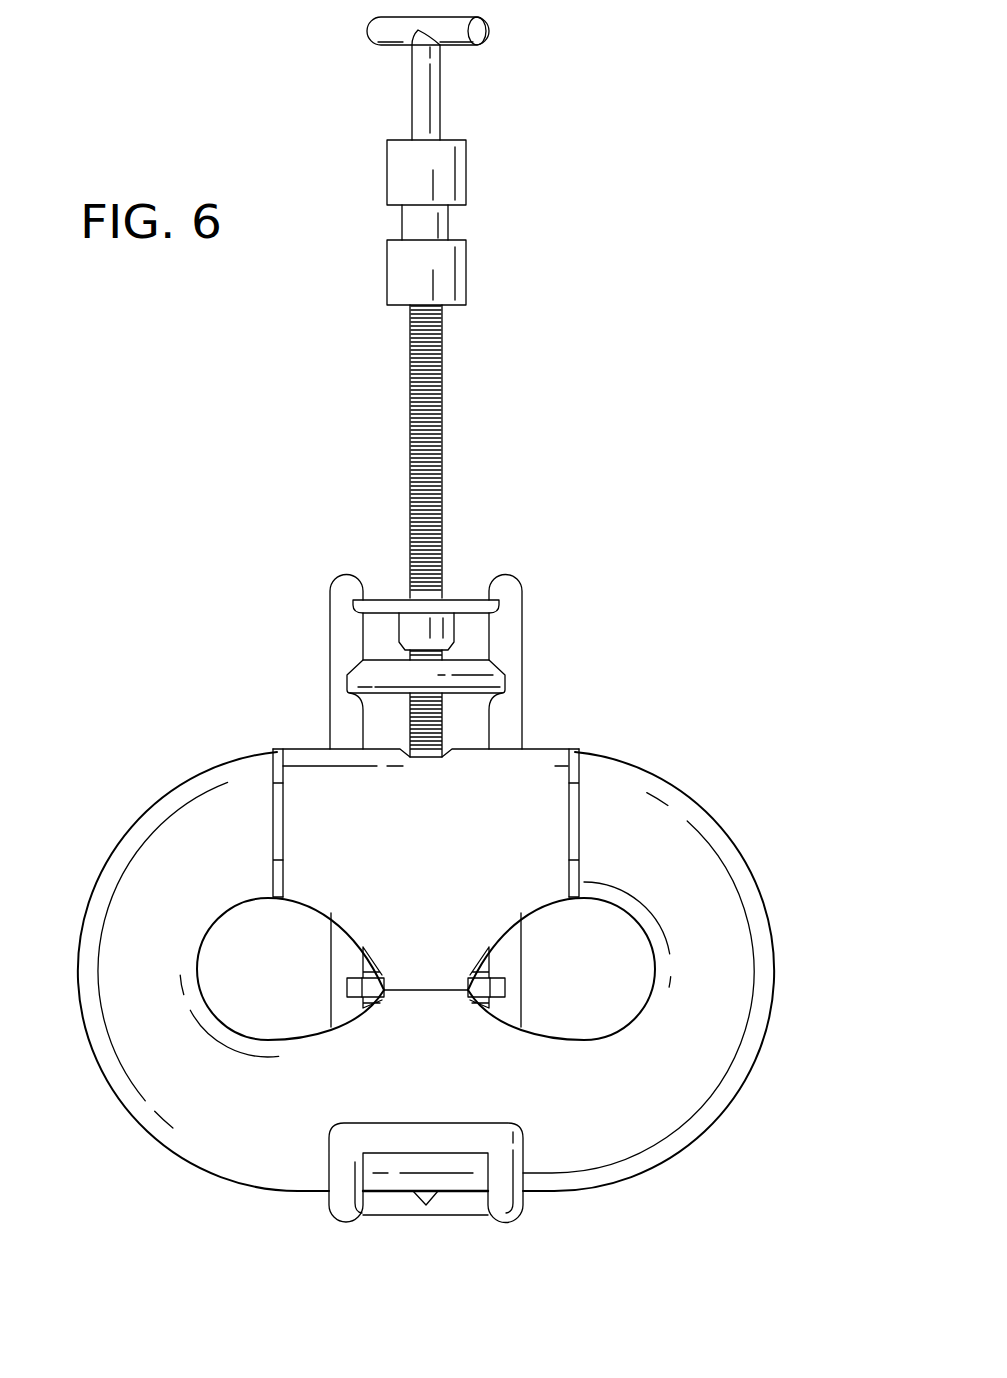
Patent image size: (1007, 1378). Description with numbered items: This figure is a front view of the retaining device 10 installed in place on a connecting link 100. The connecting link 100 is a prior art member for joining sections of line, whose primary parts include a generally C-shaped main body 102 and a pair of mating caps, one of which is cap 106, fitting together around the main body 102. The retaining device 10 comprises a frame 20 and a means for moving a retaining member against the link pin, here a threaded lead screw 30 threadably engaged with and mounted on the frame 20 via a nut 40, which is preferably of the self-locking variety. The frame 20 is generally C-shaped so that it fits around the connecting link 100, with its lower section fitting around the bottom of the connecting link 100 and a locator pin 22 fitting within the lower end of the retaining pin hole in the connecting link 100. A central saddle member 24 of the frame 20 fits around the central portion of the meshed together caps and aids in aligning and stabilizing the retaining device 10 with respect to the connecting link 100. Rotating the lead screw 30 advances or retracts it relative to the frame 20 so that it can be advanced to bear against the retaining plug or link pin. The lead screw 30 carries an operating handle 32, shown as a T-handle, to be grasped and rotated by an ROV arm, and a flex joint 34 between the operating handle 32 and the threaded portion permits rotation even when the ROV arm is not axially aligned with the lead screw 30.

The retaining device 10 is at (560, 563).
The frame 20 is at (505, 637).
The locator pin 22 is at (432, 1196).
The saddle member 24 is at (487, 987).
The lead screw 30 is at (440, 407).
The operating handle 32 is at (483, 30).
The flex joint 34 is at (443, 222).
The nut 40 is at (410, 632).
The connecting link 100 is at (156, 746).
The main body 102 is at (450, 1071).
The cap 106 is at (445, 856).